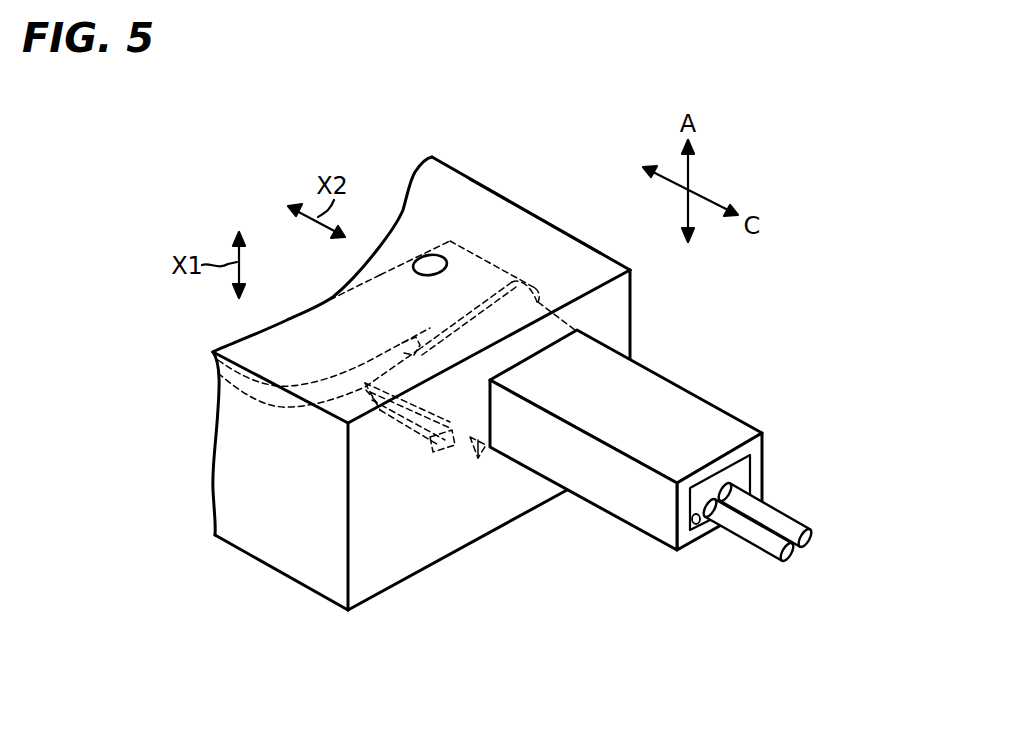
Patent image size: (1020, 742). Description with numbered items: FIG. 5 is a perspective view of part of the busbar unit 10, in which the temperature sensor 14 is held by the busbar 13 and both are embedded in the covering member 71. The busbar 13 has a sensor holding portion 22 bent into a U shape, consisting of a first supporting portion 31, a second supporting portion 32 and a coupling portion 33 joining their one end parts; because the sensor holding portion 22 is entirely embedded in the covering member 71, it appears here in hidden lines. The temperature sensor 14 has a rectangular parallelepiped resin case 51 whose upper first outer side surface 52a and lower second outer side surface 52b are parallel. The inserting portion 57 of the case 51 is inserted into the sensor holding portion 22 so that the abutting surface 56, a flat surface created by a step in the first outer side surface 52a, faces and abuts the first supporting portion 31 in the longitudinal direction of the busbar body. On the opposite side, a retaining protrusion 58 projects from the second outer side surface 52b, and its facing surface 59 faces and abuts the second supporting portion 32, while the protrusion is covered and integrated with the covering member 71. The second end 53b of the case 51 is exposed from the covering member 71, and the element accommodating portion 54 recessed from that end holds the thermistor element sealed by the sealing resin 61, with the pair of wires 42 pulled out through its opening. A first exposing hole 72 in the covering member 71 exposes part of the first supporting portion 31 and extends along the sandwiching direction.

The busbar unit 10 is at (495, 575).
The busbar 13 is at (288, 405).
The temperature sensor 14 is at (676, 453).
The sensor holding portion 22 is at (480, 252).
The first supporting portion 31 is at (387, 272).
The second supporting portion 32 is at (412, 435).
The coupling portion 33 is at (540, 302).
The wires 42 is at (776, 520).
The case 51 is at (665, 447).
The first outer side surface 52a is at (648, 380).
The second outer side surface 52b is at (624, 520).
The second end 53b is at (758, 463).
The element accommodating portion 54 is at (697, 522).
The abutting surface 56 is at (400, 342).
The inserting portion 57 is at (373, 408).
The retaining protrusion 58 is at (463, 453).
The facing surface 59 is at (434, 447).
The sealing resin 61 is at (742, 480).
The covering member 71 is at (481, 184).
The first exposing hole 72 is at (430, 268).